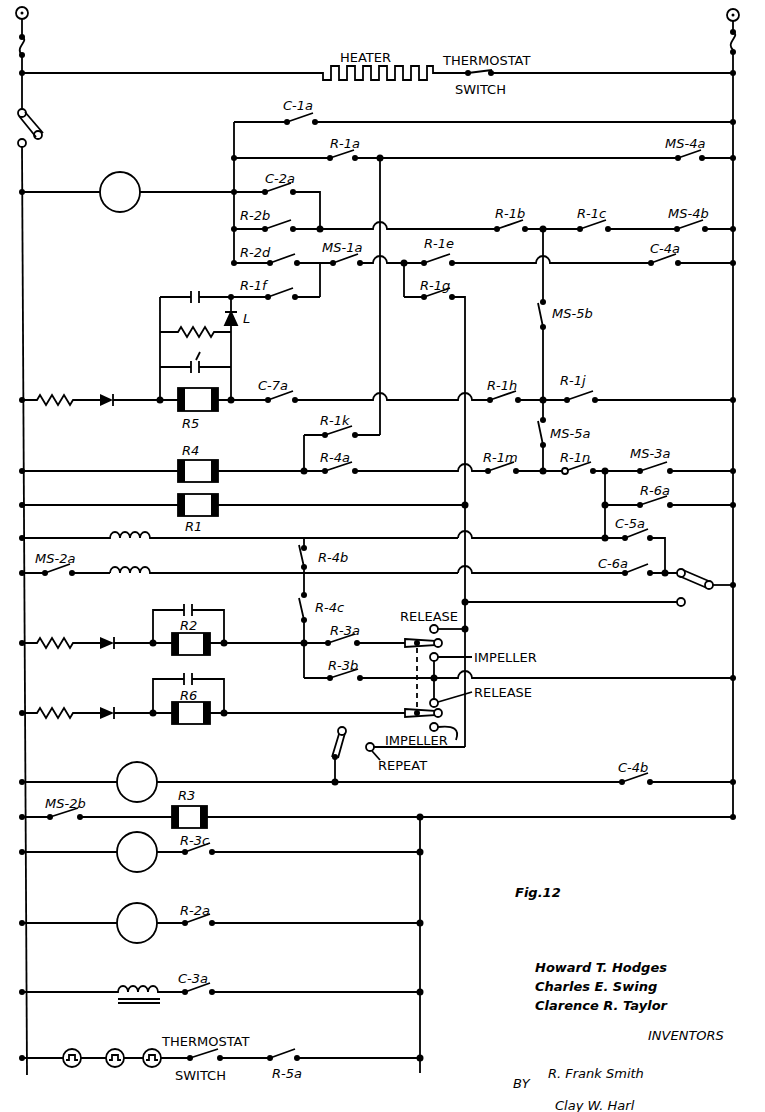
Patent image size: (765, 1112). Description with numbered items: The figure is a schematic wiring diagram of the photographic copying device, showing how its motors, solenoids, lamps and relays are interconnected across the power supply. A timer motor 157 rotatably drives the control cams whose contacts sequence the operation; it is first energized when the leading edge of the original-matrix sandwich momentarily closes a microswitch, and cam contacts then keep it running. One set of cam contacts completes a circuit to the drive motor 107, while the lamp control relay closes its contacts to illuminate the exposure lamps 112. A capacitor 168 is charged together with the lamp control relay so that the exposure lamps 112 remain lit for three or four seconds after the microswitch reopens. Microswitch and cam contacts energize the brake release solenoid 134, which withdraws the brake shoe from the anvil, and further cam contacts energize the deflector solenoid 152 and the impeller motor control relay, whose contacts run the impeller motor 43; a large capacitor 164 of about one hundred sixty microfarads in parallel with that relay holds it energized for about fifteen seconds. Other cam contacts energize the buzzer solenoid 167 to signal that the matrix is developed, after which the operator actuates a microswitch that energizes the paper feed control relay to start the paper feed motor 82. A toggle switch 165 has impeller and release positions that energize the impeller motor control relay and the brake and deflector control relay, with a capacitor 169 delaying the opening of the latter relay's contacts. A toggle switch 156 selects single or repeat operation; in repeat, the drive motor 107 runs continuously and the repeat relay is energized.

The timer motor 157 is at (138, 180).
The capacitor 168 is at (195, 339).
The brake release solenoid 134 is at (145, 544).
The deflector solenoid 152 is at (150, 568).
The capacitor 164 is at (190, 602).
The capacitor 169 is at (192, 672).
The toggle switch 165 is at (410, 706).
The toggle switch 156 is at (700, 585).
The drive motor 107 is at (155, 772).
The paper feed motor 82 is at (125, 840).
The impeller motor 43 is at (124, 908).
The buzzer solenoid 167 is at (130, 985).
The exposure lamps 112 is at (76, 1066).